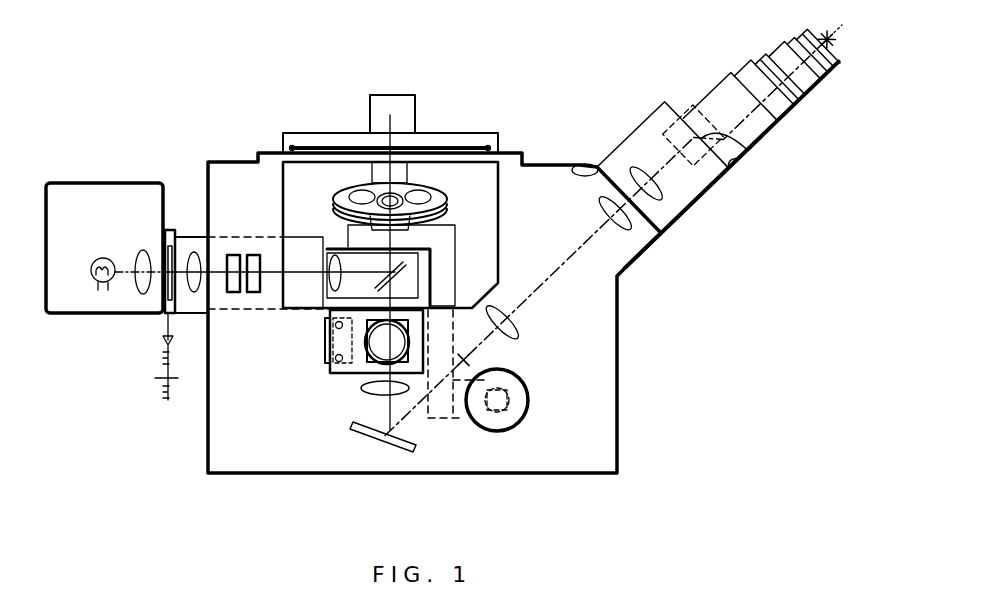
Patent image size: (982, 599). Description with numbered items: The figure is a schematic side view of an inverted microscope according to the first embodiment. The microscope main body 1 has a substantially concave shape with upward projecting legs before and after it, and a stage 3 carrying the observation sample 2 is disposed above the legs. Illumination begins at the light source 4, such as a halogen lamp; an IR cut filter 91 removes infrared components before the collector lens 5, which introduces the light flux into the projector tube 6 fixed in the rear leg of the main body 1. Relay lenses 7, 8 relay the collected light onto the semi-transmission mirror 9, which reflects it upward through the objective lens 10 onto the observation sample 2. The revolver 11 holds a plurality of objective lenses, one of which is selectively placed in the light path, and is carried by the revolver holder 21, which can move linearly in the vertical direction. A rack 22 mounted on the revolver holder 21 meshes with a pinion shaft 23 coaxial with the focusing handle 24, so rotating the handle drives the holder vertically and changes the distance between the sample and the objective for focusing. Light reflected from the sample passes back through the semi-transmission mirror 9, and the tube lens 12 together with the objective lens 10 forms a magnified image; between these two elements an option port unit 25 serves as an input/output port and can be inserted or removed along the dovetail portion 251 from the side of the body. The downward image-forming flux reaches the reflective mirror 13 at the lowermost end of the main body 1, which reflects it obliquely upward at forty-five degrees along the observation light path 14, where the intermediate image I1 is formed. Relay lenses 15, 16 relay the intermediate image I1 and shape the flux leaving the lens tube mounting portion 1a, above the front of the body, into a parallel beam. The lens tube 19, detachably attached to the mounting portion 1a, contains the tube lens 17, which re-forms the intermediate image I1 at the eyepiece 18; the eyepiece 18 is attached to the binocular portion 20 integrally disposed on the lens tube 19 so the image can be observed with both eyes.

The microscope main body 1 is at (590, 357).
The lens tube mounting portion 1a is at (582, 166).
The observation sample 2 is at (408, 108).
The stage 3 is at (482, 135).
The light source 4 is at (92, 185).
The collector lens 5 is at (143, 250).
The projector tube 6 is at (194, 305).
The relay lens 7 is at (194, 252).
The relay lens 8 is at (330, 255).
The semi-transmission mirror 9 is at (393, 272).
The objective lens 10 is at (406, 178).
The revolver 11 is at (345, 197).
The tube lens 12 is at (363, 389).
The reflective mirror 13 is at (396, 450).
The observation light path 14 is at (615, 232).
The relay lens 15 is at (515, 309).
The relay lens 16 is at (630, 207).
The tube lens 17 is at (661, 177).
The eyepiece 18 is at (805, 51).
The lens tube 19 is at (734, 125).
The binocular portion 20 is at (709, 137).
The revolver holder 21 is at (445, 252).
The rack 22 is at (462, 420).
The pinion shaft 23 is at (502, 420).
The focusing handle 24 is at (530, 400).
The option port unit 25 is at (360, 374).
The dovetail portion 251 is at (325, 340).
The IR cut filter 91 is at (172, 232).
The intermediate image I1 is at (477, 346).